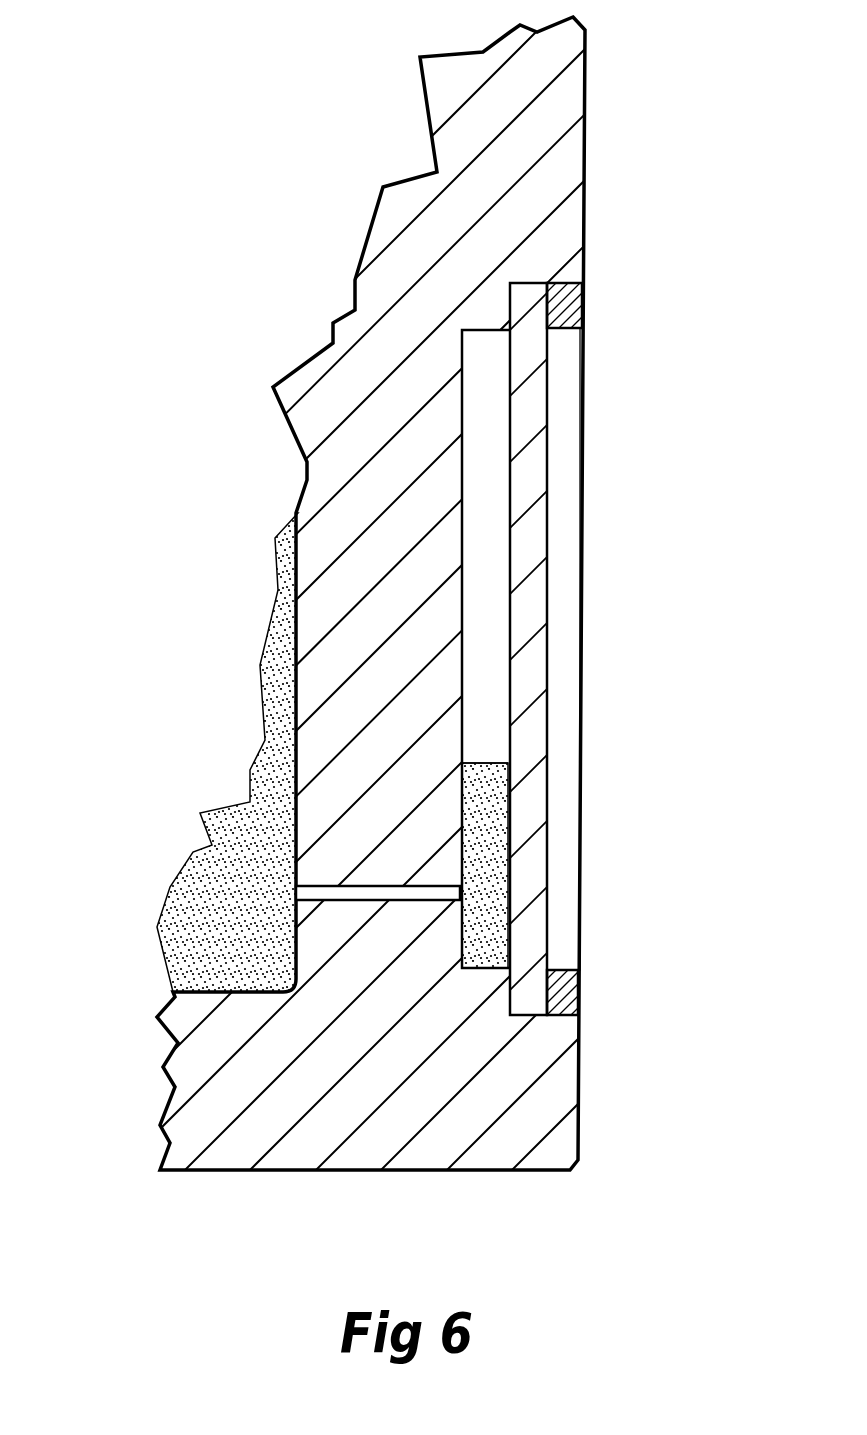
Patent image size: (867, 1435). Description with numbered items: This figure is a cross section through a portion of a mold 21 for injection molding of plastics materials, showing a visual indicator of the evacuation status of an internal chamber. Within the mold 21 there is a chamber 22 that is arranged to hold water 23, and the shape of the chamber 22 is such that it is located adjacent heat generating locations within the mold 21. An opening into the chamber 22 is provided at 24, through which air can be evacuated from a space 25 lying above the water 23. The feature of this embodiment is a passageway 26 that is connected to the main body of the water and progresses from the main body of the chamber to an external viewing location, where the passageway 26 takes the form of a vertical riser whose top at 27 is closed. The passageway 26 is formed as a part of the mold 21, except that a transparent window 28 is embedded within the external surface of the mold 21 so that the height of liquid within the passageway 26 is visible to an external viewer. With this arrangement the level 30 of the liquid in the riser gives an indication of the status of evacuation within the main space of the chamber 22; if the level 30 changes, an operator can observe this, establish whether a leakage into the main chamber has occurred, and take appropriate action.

The mold 21 is at (350, 397).
The chamber 22 is at (482, 637).
The water 23 is at (480, 812).
The opening 24 is at (465, 888).
The space 25 is at (487, 500).
The passageway 26 is at (297, 887).
The top of the passageway 27 is at (490, 357).
The transparent window 28 is at (530, 568).
The level 30 is at (483, 757).